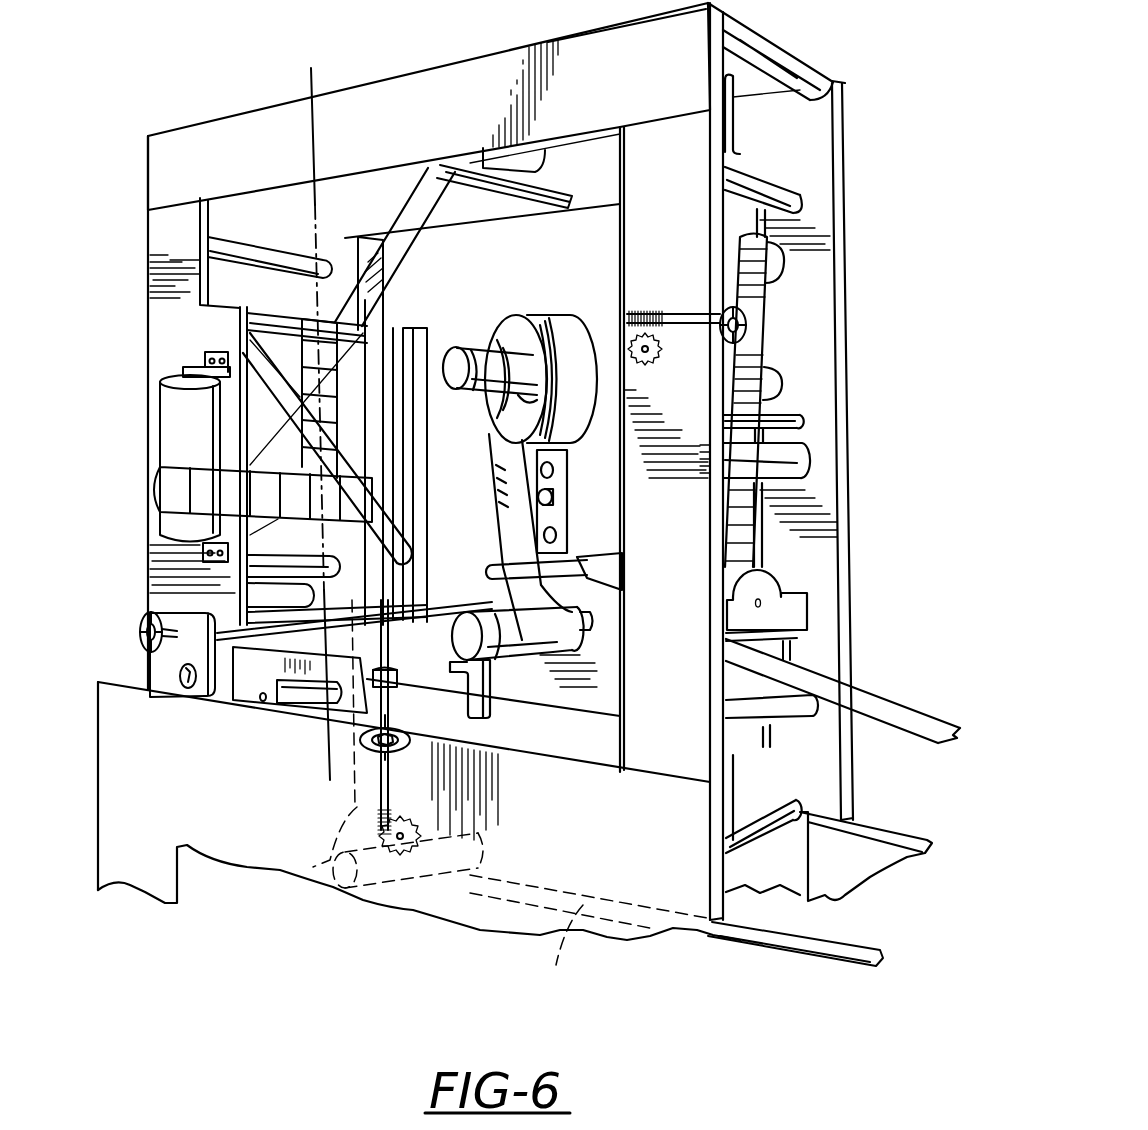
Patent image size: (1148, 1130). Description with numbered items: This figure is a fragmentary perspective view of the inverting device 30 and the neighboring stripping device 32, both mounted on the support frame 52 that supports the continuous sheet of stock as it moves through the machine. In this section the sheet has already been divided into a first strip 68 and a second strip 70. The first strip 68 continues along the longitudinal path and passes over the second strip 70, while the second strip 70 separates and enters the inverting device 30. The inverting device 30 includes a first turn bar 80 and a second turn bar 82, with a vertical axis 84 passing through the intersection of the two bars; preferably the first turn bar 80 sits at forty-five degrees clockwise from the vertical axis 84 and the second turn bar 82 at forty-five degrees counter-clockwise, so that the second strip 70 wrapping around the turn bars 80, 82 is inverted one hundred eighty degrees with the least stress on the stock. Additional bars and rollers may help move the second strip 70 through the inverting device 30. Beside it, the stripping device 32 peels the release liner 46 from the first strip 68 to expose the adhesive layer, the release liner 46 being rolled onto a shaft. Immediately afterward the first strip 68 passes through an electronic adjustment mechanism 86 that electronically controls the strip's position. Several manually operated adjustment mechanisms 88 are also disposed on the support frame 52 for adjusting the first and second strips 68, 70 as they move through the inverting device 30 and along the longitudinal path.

The inverting device 30 is at (138, 310).
The stripping device 32 is at (574, 312).
The release liner 46 is at (497, 325).
The support frame 52 is at (130, 868).
The first strip 68 is at (407, 222).
The second strip 70 is at (268, 330).
The first turn bar 80 is at (418, 330).
The second turn bar 82 is at (400, 527).
The vertical axis 84 is at (311, 118).
The electronic adjustment mechanism 86 is at (797, 613).
The manually operated adjustment mechanisms 88 is at (667, 313).